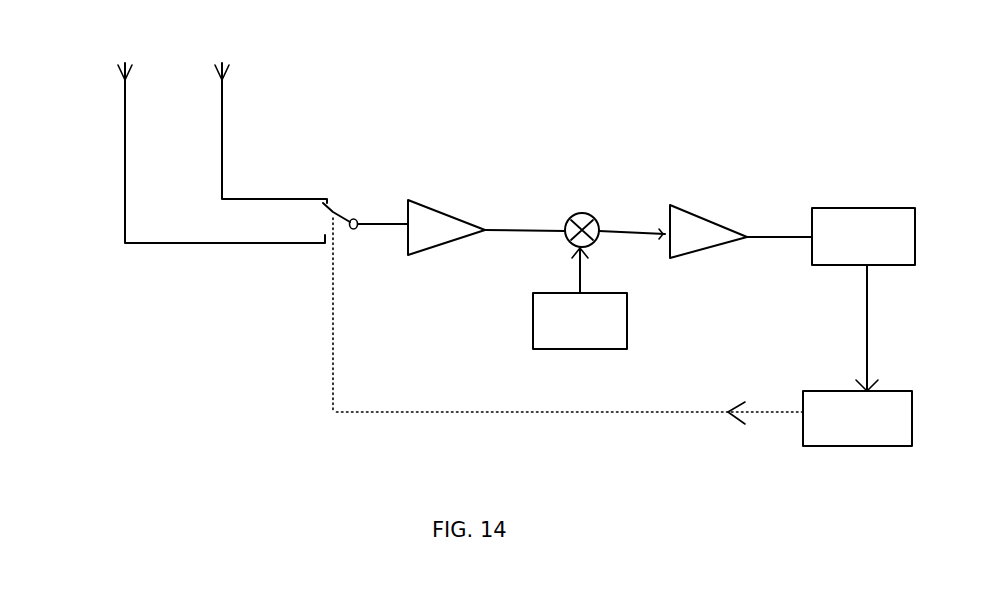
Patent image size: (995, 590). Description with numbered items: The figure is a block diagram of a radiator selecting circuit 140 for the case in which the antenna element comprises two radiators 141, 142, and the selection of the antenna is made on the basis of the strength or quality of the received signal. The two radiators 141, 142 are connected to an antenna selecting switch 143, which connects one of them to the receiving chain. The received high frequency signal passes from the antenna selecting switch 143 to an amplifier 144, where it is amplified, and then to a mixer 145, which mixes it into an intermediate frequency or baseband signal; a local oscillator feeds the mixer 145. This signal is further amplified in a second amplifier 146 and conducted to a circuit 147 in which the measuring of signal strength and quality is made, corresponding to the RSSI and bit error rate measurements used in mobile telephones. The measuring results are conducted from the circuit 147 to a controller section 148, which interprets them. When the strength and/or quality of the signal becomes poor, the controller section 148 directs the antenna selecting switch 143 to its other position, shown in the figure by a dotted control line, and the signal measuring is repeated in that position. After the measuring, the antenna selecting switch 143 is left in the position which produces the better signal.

The radiator selecting circuit 140 is at (620, 42).
The radiator 141 is at (125, 119).
The radiator 142 is at (228, 104).
The antenna selecting switch 143 is at (333, 212).
The amplifier 144 is at (445, 207).
The mixer 145 is at (580, 212).
The amplifier 146 is at (705, 215).
The circuit 147 is at (855, 205).
The controller section 148 is at (850, 448).